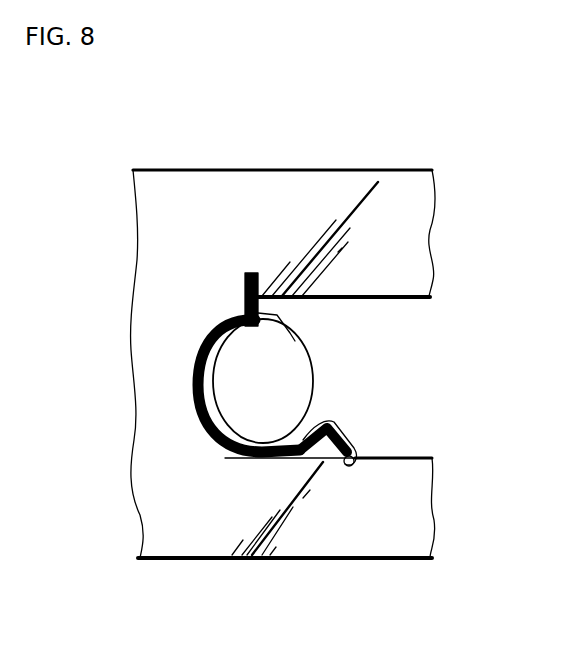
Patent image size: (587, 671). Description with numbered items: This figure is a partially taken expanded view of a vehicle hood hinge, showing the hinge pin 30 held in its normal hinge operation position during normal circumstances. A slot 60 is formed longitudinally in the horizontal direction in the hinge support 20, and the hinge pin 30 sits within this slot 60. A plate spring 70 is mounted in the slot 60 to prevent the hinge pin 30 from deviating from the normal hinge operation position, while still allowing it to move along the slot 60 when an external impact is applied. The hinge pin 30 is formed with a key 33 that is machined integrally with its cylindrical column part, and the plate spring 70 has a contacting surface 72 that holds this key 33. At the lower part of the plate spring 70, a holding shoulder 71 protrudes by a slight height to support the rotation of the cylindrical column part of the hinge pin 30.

The hinge support 20 is at (138, 558).
The hinge pin 30 is at (293, 377).
The key 33 is at (277, 327).
The slot 60 is at (403, 455).
The plate spring 70 is at (193, 395).
The holding shoulder 71 is at (358, 466).
The contacting surface 72 is at (261, 288).